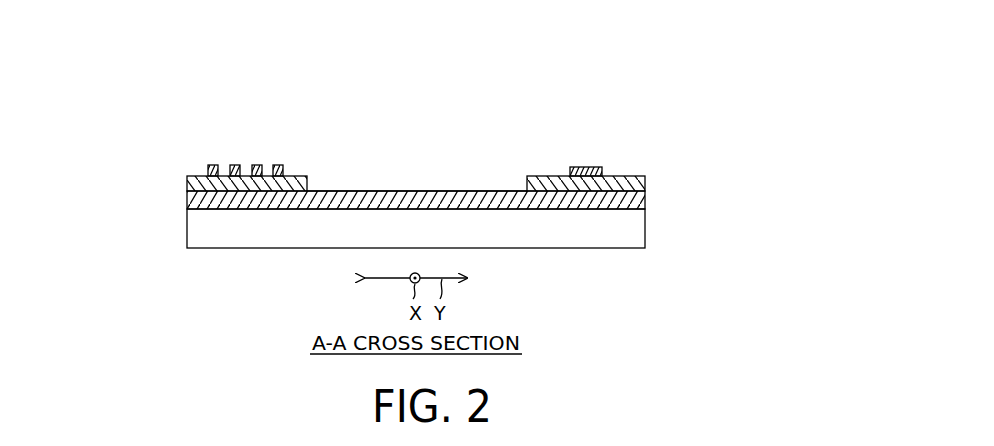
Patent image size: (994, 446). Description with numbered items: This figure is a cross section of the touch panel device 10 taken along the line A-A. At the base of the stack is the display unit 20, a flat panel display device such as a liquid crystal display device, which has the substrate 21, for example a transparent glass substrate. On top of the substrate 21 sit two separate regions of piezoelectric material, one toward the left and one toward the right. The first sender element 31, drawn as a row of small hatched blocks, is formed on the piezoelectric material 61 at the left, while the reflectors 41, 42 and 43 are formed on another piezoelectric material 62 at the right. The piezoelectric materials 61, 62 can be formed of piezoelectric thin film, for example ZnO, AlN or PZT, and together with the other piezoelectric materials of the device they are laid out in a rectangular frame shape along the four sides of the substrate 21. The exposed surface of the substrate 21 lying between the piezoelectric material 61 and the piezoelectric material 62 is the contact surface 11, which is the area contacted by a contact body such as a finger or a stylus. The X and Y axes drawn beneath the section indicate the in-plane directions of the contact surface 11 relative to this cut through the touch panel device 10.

The touch panel device 10 is at (583, 56).
The contact surface 11 is at (418, 165).
The display unit 20 is at (652, 196).
The substrate 21 is at (187, 203).
The first sender element 31 is at (285, 153).
The reflector 41 is at (583, 167).
The reflector 42 is at (586, 171).
The reflector 43 is at (586, 171).
The piezoelectric material 61 is at (187, 180).
The piezoelectric material 62 is at (645, 186).